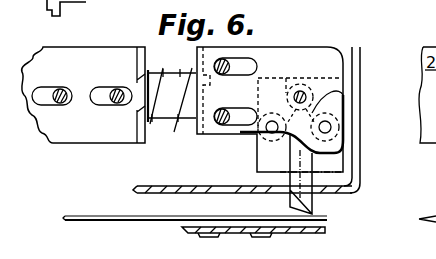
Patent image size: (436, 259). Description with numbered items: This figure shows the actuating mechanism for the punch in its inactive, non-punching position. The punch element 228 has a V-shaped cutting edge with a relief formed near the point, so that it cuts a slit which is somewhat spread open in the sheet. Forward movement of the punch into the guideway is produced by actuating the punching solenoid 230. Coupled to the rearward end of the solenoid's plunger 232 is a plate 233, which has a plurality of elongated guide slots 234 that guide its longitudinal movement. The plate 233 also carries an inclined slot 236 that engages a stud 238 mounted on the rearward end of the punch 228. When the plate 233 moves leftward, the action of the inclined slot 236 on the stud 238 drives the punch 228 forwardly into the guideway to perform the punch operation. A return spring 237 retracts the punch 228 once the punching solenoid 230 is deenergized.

The punch element 228 is at (303, 199).
The punching solenoid 230 is at (90, 69).
The plunger 232 is at (157, 72).
The plate 233 is at (236, 134).
The elongated guide slots 234 is at (241, 63).
The inclined slot 236 is at (300, 95).
The return spring 237 is at (172, 114).
The stud 238 is at (343, 93).